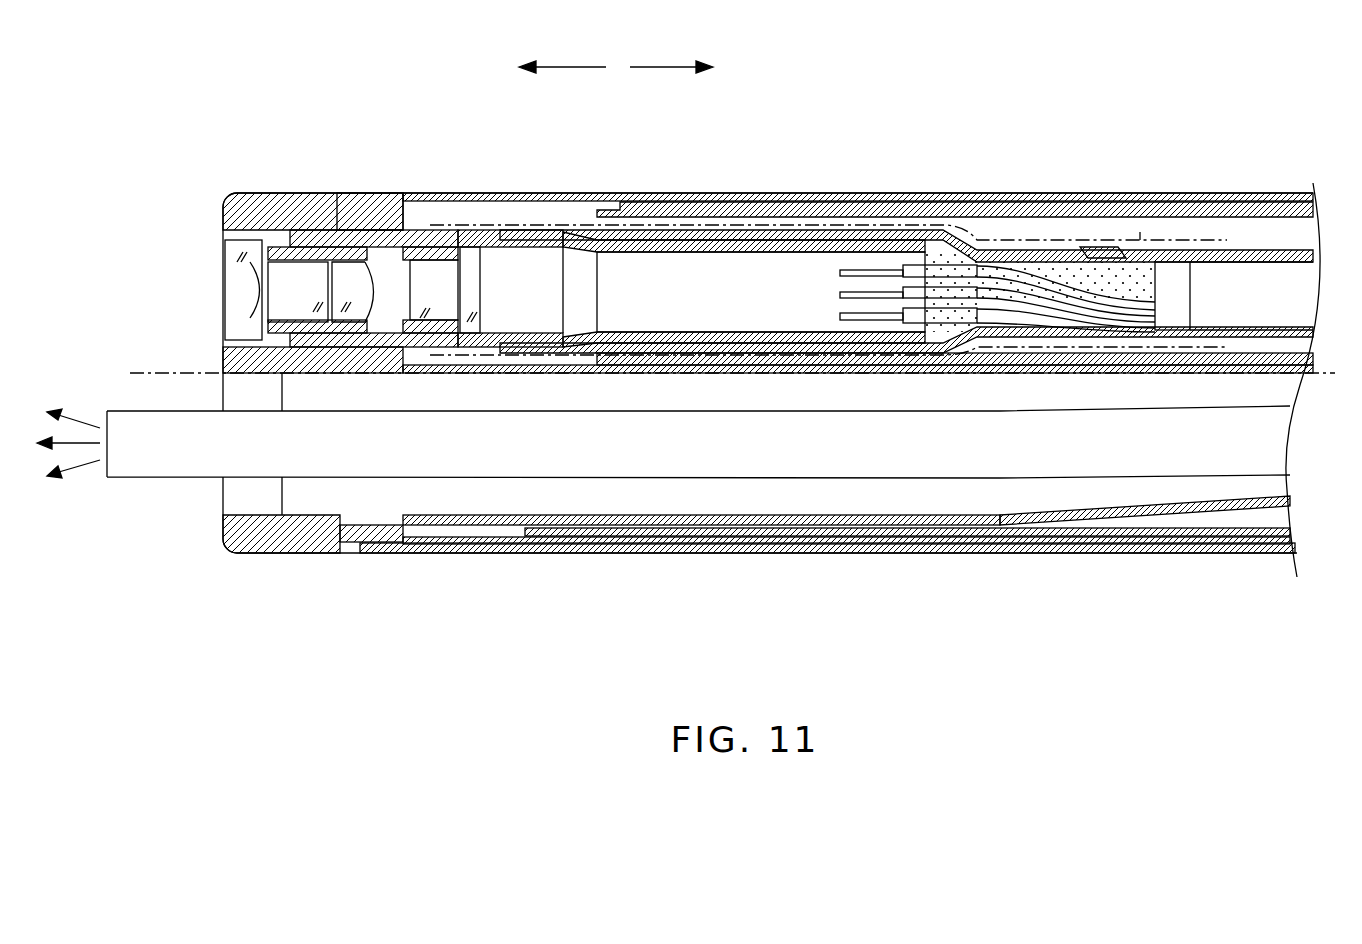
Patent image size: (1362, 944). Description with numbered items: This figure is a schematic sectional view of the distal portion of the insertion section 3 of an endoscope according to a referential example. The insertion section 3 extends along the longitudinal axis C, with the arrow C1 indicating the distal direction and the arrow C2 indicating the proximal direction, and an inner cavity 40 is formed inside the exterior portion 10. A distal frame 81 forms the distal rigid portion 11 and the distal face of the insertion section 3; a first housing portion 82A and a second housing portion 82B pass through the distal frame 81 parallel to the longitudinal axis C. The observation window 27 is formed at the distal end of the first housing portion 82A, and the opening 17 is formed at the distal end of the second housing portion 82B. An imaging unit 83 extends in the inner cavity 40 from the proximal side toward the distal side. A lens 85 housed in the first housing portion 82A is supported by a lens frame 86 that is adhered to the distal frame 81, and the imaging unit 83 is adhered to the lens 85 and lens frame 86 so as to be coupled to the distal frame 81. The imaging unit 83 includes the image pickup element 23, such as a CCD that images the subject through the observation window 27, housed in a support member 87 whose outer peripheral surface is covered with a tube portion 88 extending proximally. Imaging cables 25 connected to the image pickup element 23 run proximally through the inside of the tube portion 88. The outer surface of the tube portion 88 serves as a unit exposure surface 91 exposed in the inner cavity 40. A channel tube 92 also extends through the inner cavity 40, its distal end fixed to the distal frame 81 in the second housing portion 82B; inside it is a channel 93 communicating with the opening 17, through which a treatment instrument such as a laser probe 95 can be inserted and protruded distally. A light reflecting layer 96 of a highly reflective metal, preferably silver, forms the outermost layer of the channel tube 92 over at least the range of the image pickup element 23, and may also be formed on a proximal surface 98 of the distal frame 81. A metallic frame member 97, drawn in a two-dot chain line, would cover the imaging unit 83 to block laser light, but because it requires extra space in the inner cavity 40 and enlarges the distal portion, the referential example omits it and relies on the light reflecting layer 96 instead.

The insertion section 3 is at (955, 127).
The exterior portion 10 is at (1130, 192).
The distal rigid portion 11 is at (298, 193).
The opening 17 is at (220, 500).
The image pickup element 23 is at (522, 247).
The imaging cables 25 is at (1100, 310).
The observation window 27 is at (222, 290).
The inner cavity 40 is at (1207, 236).
The distal frame 81 is at (246, 194).
The first housing portion 82A is at (368, 196).
The second housing portion 82B is at (257, 504).
The imaging unit 83 is at (739, 256).
The lens 85 is at (355, 313).
The lens frame 86 is at (425, 230).
The support member 87 is at (640, 240).
The tube portion 88 is at (690, 230).
The unit exposure surface 91 is at (1003, 250).
The channel tube 92 is at (1130, 514).
The channel 93 is at (921, 506).
The laser probe 95 is at (572, 470).
The light reflecting layer 96 is at (806, 530).
The frame member 97 is at (826, 204).
The proximal surface 98 is at (405, 542).
The longitudinal axis C is at (1330, 385).
The distal direction C1 is at (562, 54).
The proximal direction C2 is at (671, 54).